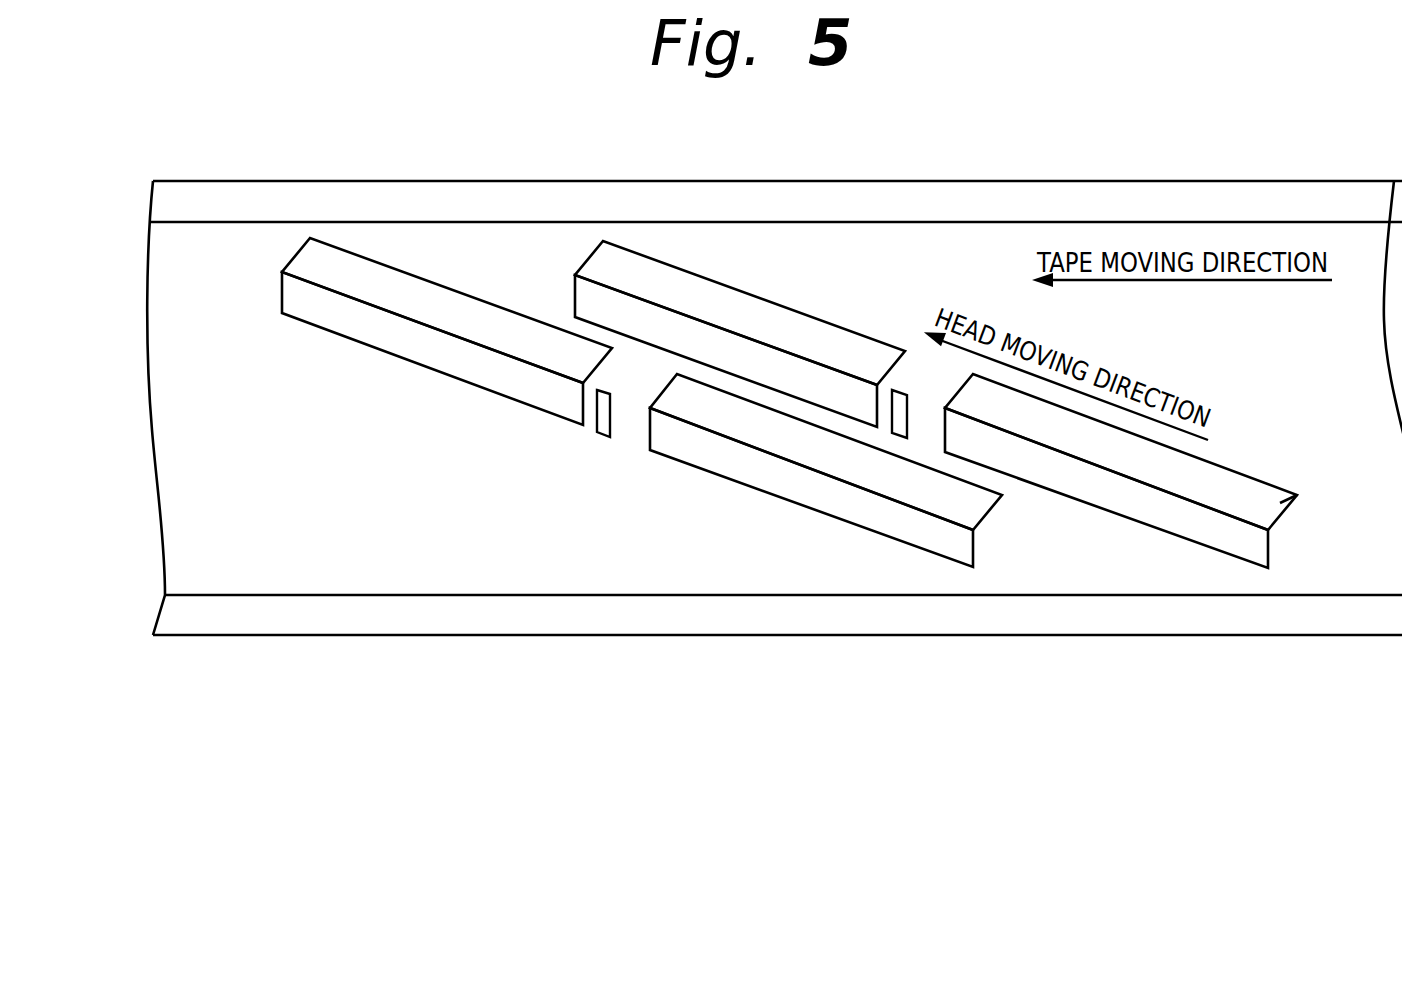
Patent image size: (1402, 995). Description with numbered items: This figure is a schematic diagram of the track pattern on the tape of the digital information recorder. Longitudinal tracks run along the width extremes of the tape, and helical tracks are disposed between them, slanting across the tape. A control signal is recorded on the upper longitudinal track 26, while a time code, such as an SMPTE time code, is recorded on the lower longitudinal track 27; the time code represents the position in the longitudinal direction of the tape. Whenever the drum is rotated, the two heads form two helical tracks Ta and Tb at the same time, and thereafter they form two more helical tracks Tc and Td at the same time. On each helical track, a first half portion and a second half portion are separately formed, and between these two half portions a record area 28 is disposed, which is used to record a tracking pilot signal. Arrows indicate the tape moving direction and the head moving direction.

The upper longitudinal track 26 is at (602, 208).
The lower longitudinal track 27 is at (770, 623).
The record area 28 is at (603, 424).
The helical track Ta is at (953, 545).
The helical track Tb is at (975, 508).
The helical track Tc is at (1245, 545).
The helical track Td is at (1280, 503).